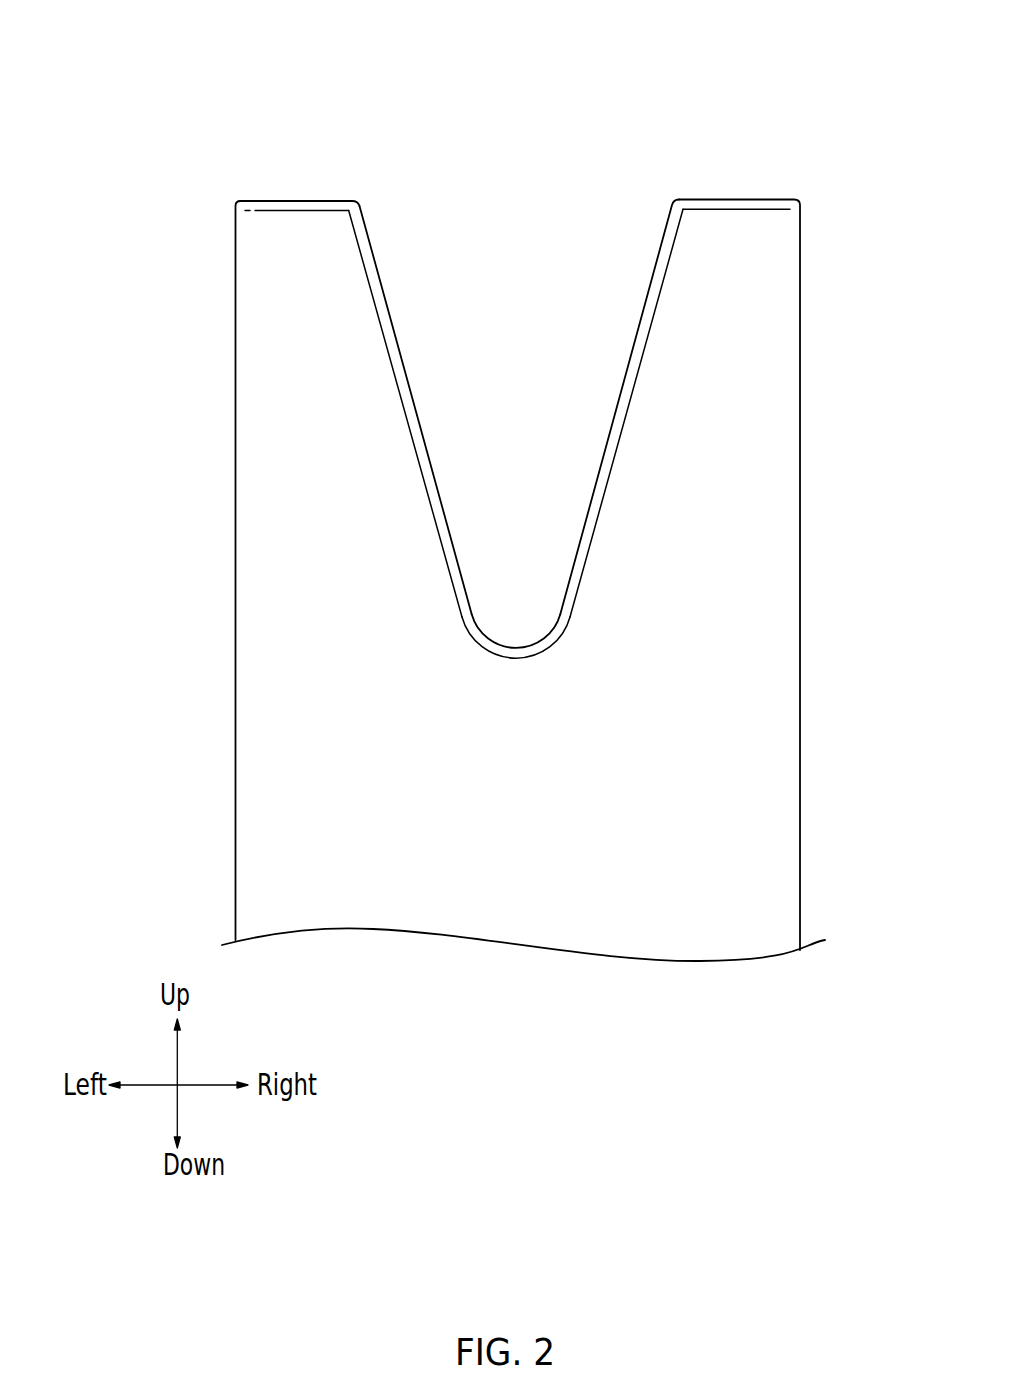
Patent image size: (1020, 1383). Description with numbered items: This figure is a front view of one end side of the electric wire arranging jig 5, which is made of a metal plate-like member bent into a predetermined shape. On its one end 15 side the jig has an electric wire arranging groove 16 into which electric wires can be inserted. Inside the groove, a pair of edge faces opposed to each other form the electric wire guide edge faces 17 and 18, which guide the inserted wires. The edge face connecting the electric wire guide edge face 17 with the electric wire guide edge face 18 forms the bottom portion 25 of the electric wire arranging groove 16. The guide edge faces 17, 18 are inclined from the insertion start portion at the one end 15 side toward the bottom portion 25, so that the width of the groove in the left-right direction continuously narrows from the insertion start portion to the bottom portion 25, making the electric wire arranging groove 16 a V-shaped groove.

The electric wire arranging jig 5 is at (552, 480).
The one end 15 is at (262, 201).
The electric wire arranging groove 16 is at (615, 370).
The electric wire guide edge face 17 is at (643, 311).
The electric wire guide edge face 18 is at (393, 307).
The bottom portion 25 is at (518, 650).